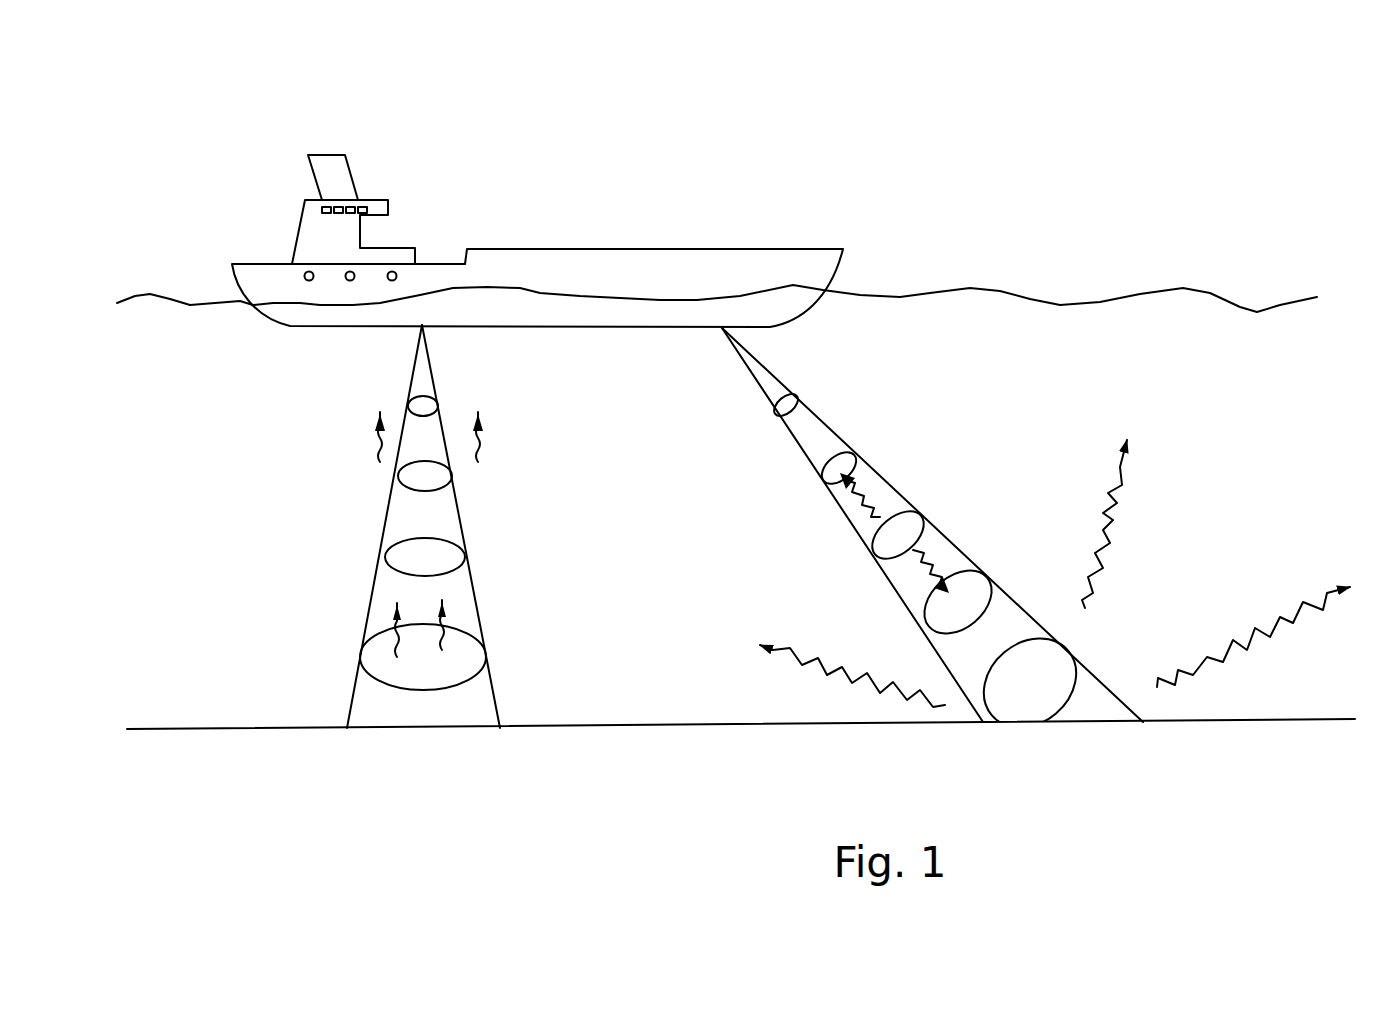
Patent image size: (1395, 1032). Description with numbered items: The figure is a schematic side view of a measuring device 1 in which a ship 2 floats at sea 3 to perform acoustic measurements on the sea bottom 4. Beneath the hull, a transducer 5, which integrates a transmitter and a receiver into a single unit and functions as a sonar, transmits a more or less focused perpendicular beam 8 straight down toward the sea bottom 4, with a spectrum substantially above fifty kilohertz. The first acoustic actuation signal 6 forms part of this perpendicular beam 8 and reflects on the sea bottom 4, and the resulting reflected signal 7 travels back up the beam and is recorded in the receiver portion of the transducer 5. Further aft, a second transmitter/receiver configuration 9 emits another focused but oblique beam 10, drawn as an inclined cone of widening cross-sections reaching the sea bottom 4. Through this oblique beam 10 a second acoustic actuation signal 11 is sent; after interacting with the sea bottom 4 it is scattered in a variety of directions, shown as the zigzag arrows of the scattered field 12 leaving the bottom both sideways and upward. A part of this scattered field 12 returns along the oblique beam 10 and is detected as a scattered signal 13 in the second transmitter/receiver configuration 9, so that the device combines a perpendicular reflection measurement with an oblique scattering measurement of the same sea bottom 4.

The measuring device 1 is at (958, 138).
The ship 2 is at (270, 222).
The sea 3 is at (1256, 368).
The sea bottom 4 is at (603, 779).
The transducer 5 is at (422, 526).
The first acoustic actuation signal 6 is at (394, 612).
The reflected signal 7 is at (447, 640).
The perpendicular beam 8 is at (432, 517).
The second transmitter/receiver configuration 9 is at (925, 537).
The oblique beam 10 is at (800, 438).
The second acoustic actuation signal 11 is at (937, 583).
The scattered field 12 is at (813, 653).
The scattered signal 13 is at (862, 494).